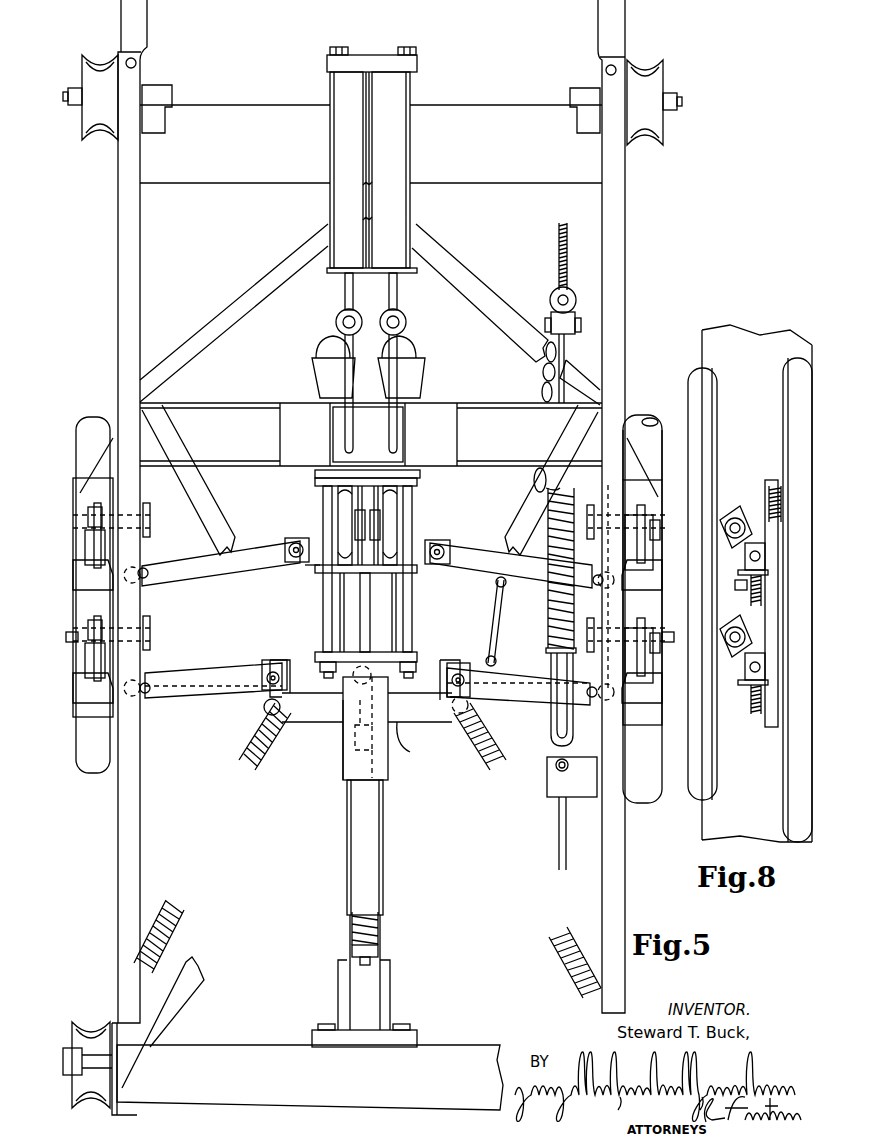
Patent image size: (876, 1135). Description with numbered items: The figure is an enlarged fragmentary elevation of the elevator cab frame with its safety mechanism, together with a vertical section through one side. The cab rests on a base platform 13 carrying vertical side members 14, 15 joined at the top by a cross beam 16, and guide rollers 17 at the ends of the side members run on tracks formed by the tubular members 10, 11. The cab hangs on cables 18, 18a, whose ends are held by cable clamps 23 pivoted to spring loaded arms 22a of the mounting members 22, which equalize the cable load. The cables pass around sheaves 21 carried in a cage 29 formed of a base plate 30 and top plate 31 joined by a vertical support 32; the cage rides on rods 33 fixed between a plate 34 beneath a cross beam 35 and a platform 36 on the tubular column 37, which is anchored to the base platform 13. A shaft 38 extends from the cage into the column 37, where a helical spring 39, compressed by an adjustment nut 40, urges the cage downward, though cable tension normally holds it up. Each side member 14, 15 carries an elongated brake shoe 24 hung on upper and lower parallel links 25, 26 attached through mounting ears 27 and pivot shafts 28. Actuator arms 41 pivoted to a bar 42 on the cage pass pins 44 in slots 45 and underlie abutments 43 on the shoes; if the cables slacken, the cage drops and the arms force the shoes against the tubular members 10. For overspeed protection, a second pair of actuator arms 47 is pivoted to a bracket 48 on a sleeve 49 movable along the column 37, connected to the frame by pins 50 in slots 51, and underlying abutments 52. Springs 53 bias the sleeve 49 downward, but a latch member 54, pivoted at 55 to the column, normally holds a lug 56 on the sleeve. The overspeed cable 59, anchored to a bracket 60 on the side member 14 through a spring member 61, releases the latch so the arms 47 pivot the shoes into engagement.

In FIG. 8, the tubular members 10 is at (788, 418).
In FIG. 5, the tubular members 11 is at (640, 420).
In FIG. 8, the tubular members 11 is at (710, 415).
In FIG. 5, the base platform 13 is at (233, 1048).
In FIG. 5, the vertical side member 14 is at (620, 260).
In FIG. 8, the vertical side member 14 is at (740, 340).
In FIG. 5, the vertical side member 15 is at (120, 269).
In FIG. 5, the cross beam 16 is at (238, 108).
In FIG. 5, the guide rollers 17 is at (100, 75).
In FIG. 5, the cable 18 is at (345, 437).
In FIG. 5, the cable 18a is at (398, 439).
In FIG. 5, the sheaves 21 is at (345, 570).
In FIG. 5, the mounting members 22 is at (368, 55).
In FIG. 5, the spring loaded arms 22a is at (345, 297).
In FIG. 5, the cable clamps 23 is at (322, 378).
In FIG. 5, the brake shoe 24 is at (78, 590).
In FIG. 8, the brake shoe 24 is at (778, 598).
In FIG. 5, the upper parallel links 25 is at (80, 532).
In FIG. 8, the upper parallel links 25 is at (755, 543).
In FIG. 5, the lower parallel links 26 is at (80, 648).
In FIG. 8, the lower parallel links 26 is at (738, 658).
In FIG. 5, the mounting ears 27 is at (105, 545).
In FIG. 8, the mounting ears 27 is at (748, 582).
In FIG. 5, the pivot shafts 28 is at (150, 522).
In FIG. 8, the pivot shafts 28 is at (735, 518).
In FIG. 5, the cage 29 is at (306, 586).
In FIG. 5, the base plate 30 is at (415, 572).
In FIG. 5, the top plate 31 is at (412, 484).
In FIG. 5, the vertical support 32 is at (370, 502).
In FIG. 5, the rods 33 is at (325, 620).
In FIG. 5, the plate 34 is at (318, 480).
In FIG. 5, the cross beam 35 is at (228, 470).
In FIG. 5, the platform 36 is at (418, 660).
In FIG. 5, the tubular column 37 is at (378, 880).
In FIG. 5, the shaft 38 is at (370, 620).
In FIG. 5, the helical spring 39 is at (380, 955).
In FIG. 5, the adjustment nut 40 is at (383, 985).
In FIG. 5, the actuator arms 41 is at (220, 575).
In FIG. 8, the actuator arms 41 is at (768, 575).
In FIG. 5, the bar 42 is at (312, 546).
In FIG. 5, the abutments 43 is at (78, 566).
In FIG. 8, the abutments 43 is at (745, 573).
In FIG. 5, the pins 44 is at (147, 568).
In FIG. 5, the slots 45 is at (125, 580).
In FIG. 5, the actuator arms 47 is at (196, 680).
In FIG. 8, the actuator arms 47 is at (762, 700).
In FIG. 5, the bracket 48 is at (300, 722).
In FIG. 5, the sleeve 49 is at (343, 748).
In FIG. 5, the pins 50 is at (137, 698).
In FIG. 5, the slots 51 is at (148, 682).
In FIG. 5, the abutments 52 is at (80, 692).
In FIG. 5, the springs 53 is at (178, 915).
In FIG. 5, the latch member 54 is at (398, 740).
In FIG. 5, the pivot 55 is at (360, 666).
In FIG. 5, the lug 56 is at (352, 765).
In FIG. 5, the overspeed cable 59 is at (557, 240).
In FIG. 5, the bracket 60 is at (573, 797).
In FIG. 5, the spring member 61 is at (548, 618).